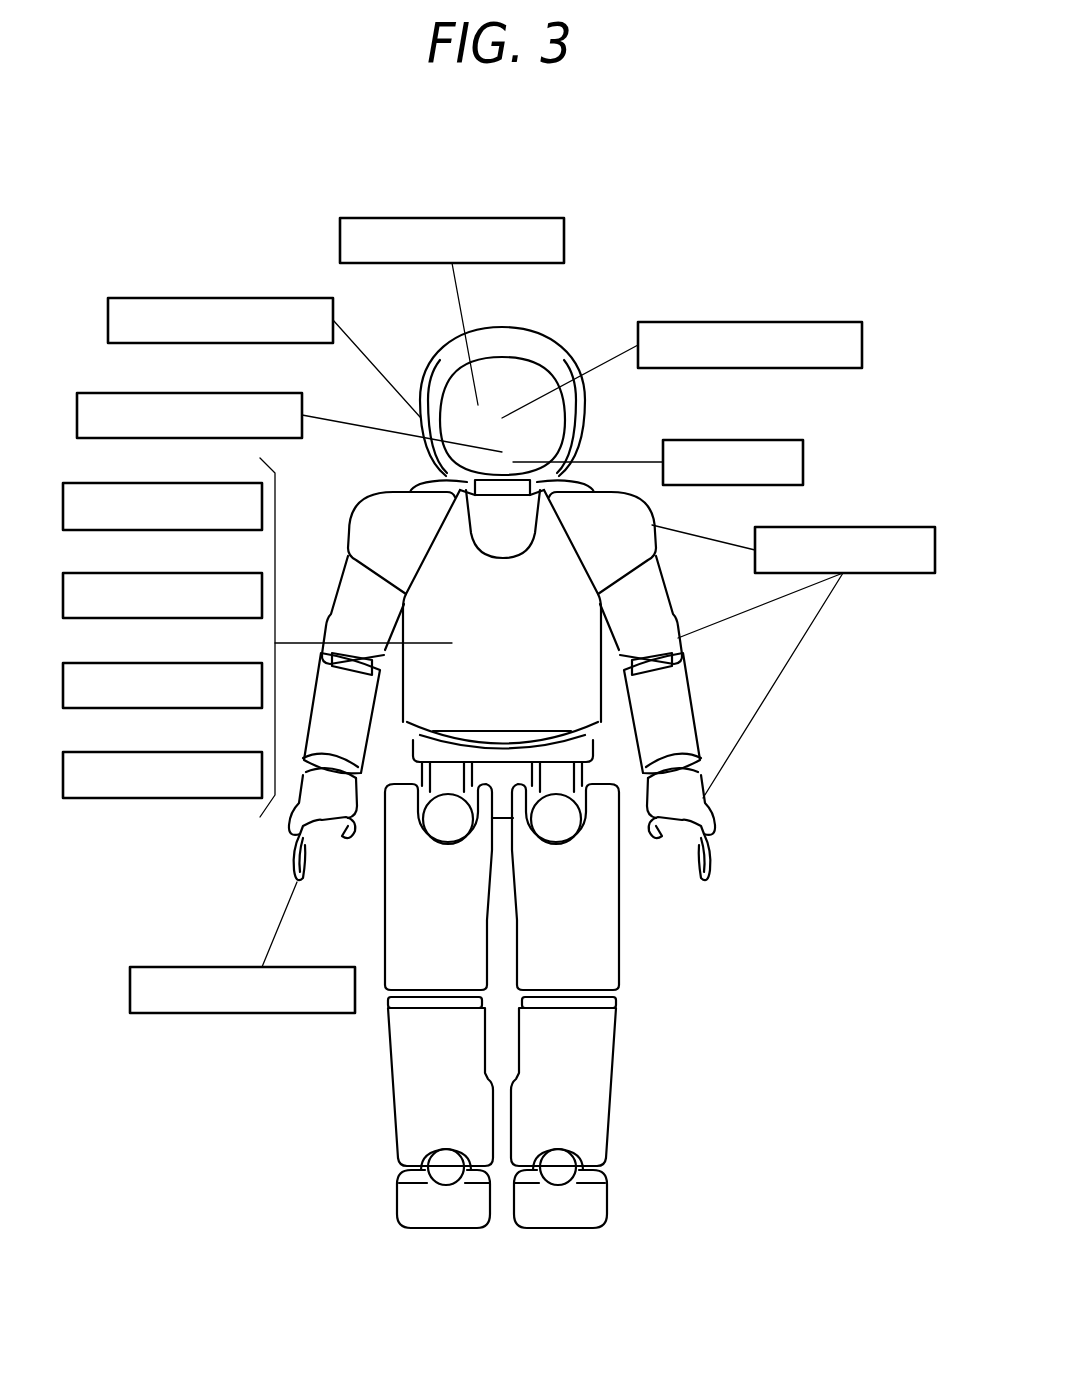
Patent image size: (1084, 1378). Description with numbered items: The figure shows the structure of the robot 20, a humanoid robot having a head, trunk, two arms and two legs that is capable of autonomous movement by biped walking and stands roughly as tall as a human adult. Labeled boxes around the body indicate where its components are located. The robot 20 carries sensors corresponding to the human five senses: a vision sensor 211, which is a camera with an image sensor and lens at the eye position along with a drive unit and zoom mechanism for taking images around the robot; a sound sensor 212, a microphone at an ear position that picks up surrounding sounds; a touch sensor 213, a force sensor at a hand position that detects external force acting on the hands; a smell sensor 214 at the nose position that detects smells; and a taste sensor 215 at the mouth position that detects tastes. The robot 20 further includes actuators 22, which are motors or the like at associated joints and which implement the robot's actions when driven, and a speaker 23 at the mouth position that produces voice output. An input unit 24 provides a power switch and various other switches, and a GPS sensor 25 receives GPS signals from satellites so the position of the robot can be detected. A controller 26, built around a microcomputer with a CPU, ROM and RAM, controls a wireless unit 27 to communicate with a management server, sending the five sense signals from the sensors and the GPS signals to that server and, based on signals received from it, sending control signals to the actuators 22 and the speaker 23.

The robot 20 is at (647, 249).
The vision sensor 211 is at (540, 218).
The sound sensor 212 is at (300, 298).
The touch sensor 213 is at (152, 967).
The smell sensor 214 is at (810, 322).
The taste sensor 215 is at (262, 393).
The actuator 22 is at (915, 527).
The speaker 23 is at (803, 458).
The input unit 24 is at (212, 483).
The GPS sensor 25 is at (212, 573).
The controller 26 is at (212, 663).
The wireless unit 27 is at (212, 752).